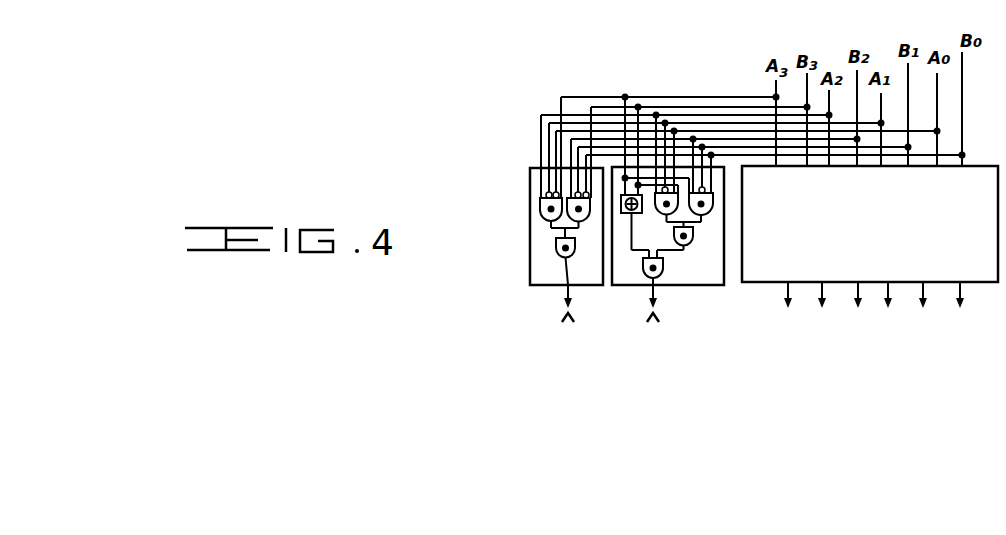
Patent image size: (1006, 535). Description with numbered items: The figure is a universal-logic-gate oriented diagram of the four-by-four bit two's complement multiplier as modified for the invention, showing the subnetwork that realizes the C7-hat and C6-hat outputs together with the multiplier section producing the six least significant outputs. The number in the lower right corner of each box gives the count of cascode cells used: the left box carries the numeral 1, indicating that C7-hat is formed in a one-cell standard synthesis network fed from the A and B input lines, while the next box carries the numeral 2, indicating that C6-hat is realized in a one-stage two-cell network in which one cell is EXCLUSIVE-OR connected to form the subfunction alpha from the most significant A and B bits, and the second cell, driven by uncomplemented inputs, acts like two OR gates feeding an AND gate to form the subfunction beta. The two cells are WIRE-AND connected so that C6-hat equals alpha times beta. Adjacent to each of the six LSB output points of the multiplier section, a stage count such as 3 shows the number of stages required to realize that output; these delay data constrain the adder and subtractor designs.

The cascode cell count of the C7 subnetwork 1 is at (566, 222).
The cascode cell count of the C6 subnetwork 2 is at (674, 222).
The stage count of an LSB output 3 is at (870, 252).